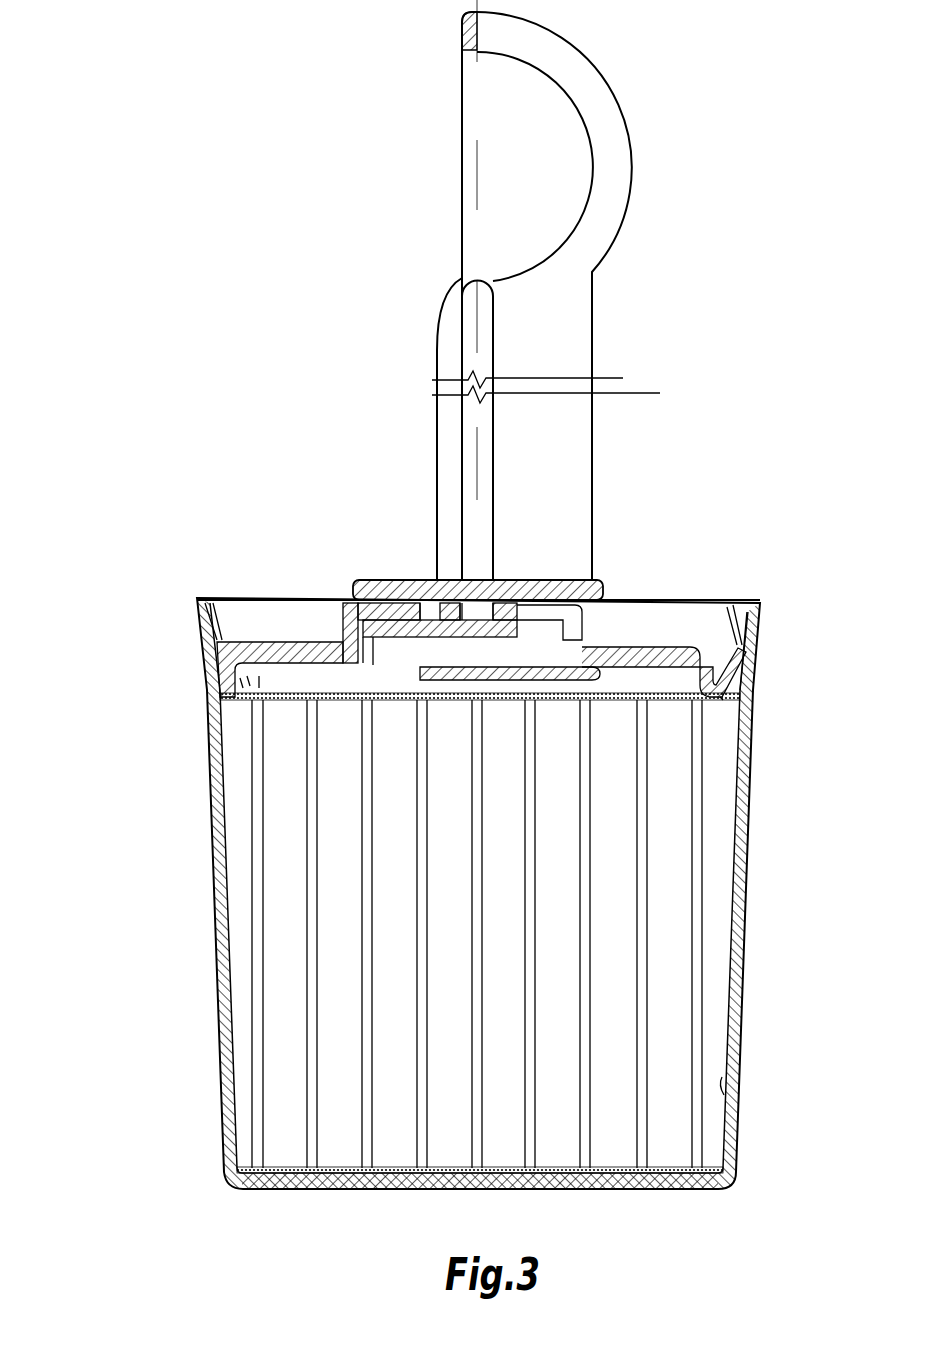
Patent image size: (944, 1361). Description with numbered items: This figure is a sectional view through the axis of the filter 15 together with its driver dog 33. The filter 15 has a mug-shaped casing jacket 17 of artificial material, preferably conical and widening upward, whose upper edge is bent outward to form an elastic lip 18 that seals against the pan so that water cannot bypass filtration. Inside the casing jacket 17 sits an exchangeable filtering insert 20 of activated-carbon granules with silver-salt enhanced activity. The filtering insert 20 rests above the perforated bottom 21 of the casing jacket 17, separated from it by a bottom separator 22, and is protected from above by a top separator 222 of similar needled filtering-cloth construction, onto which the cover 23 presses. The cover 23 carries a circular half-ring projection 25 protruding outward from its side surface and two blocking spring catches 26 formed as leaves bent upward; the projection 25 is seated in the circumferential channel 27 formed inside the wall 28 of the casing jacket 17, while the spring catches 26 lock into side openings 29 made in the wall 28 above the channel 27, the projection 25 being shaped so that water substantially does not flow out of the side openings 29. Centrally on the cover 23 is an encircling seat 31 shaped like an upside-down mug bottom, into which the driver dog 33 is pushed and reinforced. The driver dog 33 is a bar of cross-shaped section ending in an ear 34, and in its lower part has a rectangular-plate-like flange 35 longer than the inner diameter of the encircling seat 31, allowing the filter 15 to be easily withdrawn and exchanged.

The filter 15 is at (212, 857).
The casing jacket 17 is at (745, 845).
The elastic lip 18 is at (732, 608).
The filtering insert 20 is at (683, 983).
The perforated bottom 21 is at (653, 1190).
The bottom separator 22 is at (300, 1168).
The top separator 222 is at (280, 695).
The cover 23 is at (333, 642).
The circular half-ring projection 25 is at (207, 700).
The blocking spring catches 26 is at (725, 705).
The circumferential channel 27 is at (207, 688).
The wall 28 is at (745, 905).
The side openings 29 is at (748, 677).
The encircling seat 31 is at (370, 580).
The driver dog 33 is at (447, 352).
The ear 34 is at (525, 45).
The flange 35 is at (520, 580).